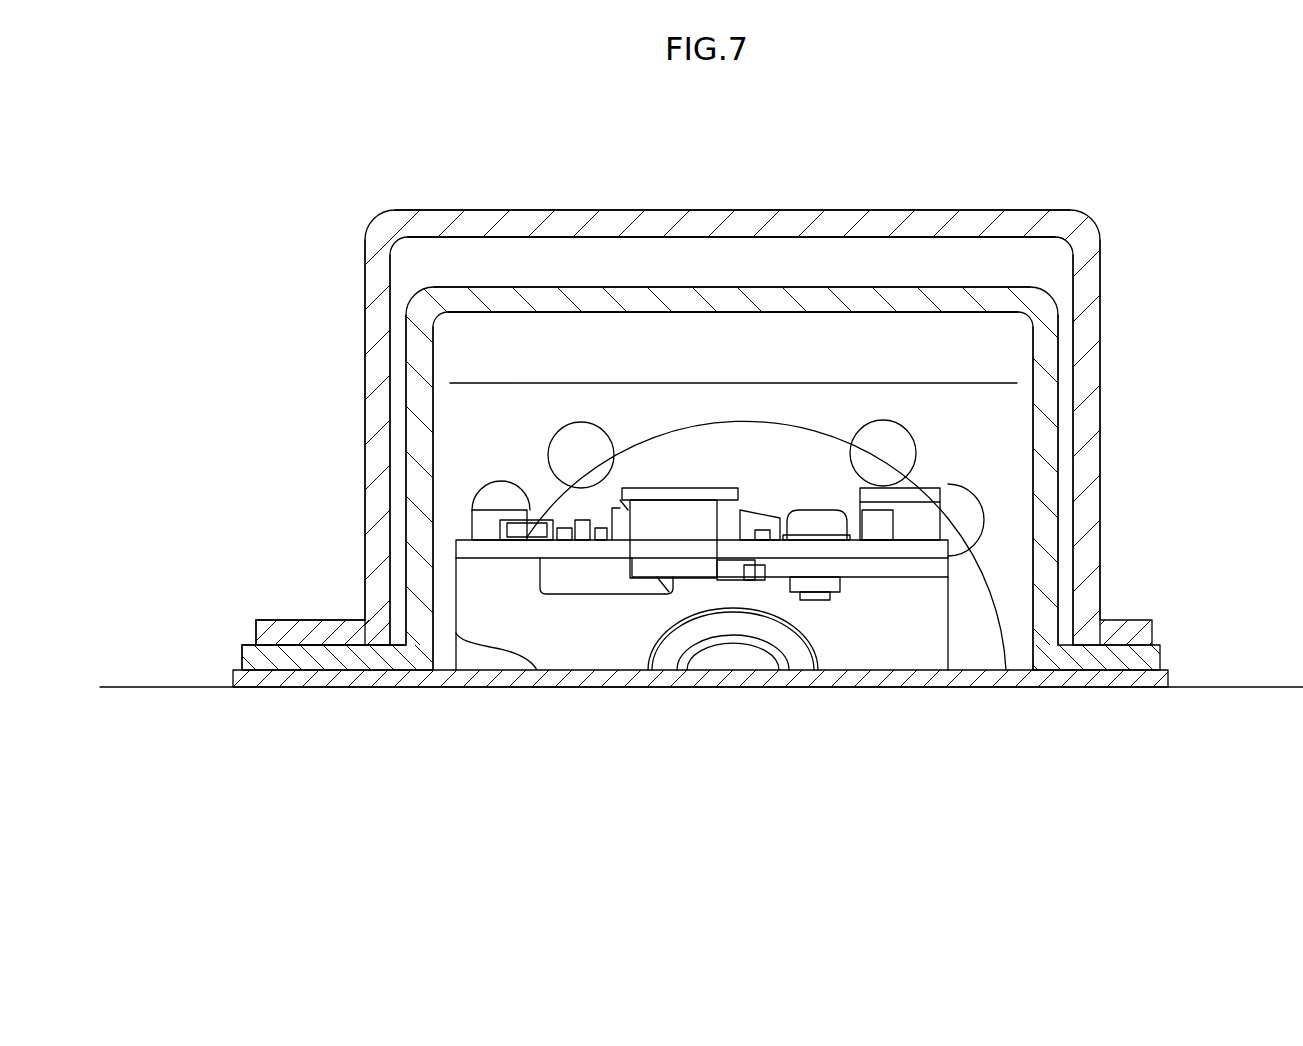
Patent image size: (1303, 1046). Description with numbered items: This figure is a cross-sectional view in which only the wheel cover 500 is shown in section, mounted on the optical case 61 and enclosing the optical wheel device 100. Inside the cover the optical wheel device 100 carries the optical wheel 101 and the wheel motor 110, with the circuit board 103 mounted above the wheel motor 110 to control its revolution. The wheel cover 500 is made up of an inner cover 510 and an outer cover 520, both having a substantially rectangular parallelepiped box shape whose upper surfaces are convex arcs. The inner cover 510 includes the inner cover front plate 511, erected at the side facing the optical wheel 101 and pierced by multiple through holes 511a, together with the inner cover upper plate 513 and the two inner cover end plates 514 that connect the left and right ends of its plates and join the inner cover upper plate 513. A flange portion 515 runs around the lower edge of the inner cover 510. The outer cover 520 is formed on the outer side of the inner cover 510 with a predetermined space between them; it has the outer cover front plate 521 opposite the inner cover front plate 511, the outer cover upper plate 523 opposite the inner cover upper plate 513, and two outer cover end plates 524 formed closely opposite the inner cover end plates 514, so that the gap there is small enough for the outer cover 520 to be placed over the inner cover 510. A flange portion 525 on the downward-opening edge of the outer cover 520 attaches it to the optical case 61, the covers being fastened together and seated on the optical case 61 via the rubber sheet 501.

The optical case 61 is at (1250, 733).
The optical wheel device 100 is at (322, 172).
The optical wheel 101 is at (792, 467).
The circuit board 103 is at (620, 550).
The wheel motor 110 is at (670, 655).
The wheel cover 500 is at (1142, 172).
The rubber sheet 501 is at (237, 680).
The inner cover 510 is at (1060, 305).
The inner cover front plate 511 is at (907, 335).
The through holes 511a is at (973, 517).
The inner cover upper plate 513 is at (783, 295).
The inner cover end plates 514 is at (418, 432).
The flange portion 515 is at (258, 660).
The outer cover 520 is at (1030, 200).
The outer cover front plate 521 is at (568, 265).
The outer cover upper plate 523 is at (680, 217).
The outer cover end plates 524 is at (380, 362).
The flange portion 525 is at (268, 633).